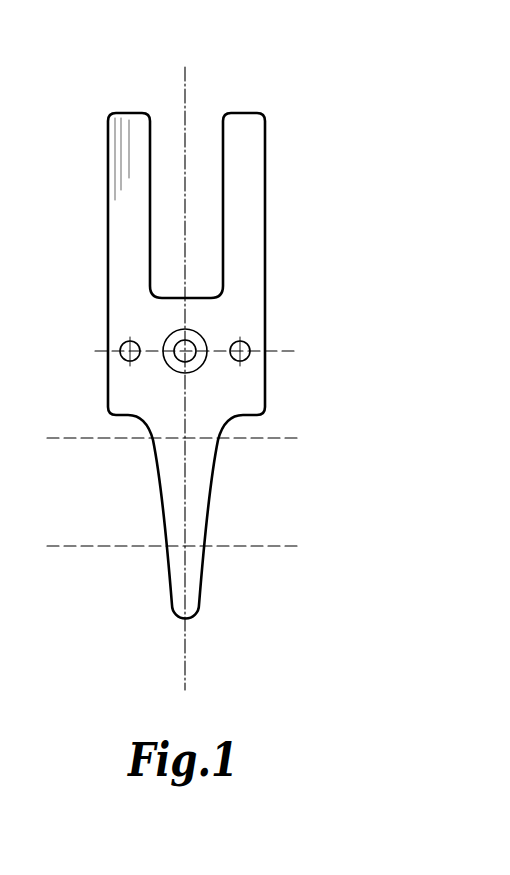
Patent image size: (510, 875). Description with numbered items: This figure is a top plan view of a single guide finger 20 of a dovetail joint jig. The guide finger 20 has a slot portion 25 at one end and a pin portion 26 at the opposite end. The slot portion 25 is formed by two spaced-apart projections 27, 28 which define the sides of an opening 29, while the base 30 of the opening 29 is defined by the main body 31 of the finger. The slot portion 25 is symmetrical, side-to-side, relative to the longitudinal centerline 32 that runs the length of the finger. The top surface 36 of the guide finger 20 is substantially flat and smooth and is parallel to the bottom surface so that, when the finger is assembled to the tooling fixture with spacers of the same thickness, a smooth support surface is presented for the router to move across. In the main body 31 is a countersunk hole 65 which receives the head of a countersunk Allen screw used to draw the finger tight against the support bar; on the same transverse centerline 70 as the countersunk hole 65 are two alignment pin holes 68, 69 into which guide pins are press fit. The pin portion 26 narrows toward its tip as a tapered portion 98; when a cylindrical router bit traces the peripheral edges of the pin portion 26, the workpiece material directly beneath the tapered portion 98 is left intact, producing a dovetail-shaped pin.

The guide finger 20 is at (334, 196).
The slot portion 25 is at (204, 114).
The pin portion 26 is at (134, 515).
The projection 27 is at (127, 183).
The projection 28 is at (245, 195).
The opening 29 is at (158, 237).
The base 30 is at (163, 290).
The main body 31 is at (155, 317).
The longitudinal centerline 32 is at (185, 107).
The top surface 36 is at (228, 312).
The countersunk hole 65 is at (172, 368).
The alignment pin hole 68 is at (125, 360).
The alignment pin hole 69 is at (243, 360).
The transverse centerline 70 is at (297, 350).
The tapered portion 98 is at (195, 478).